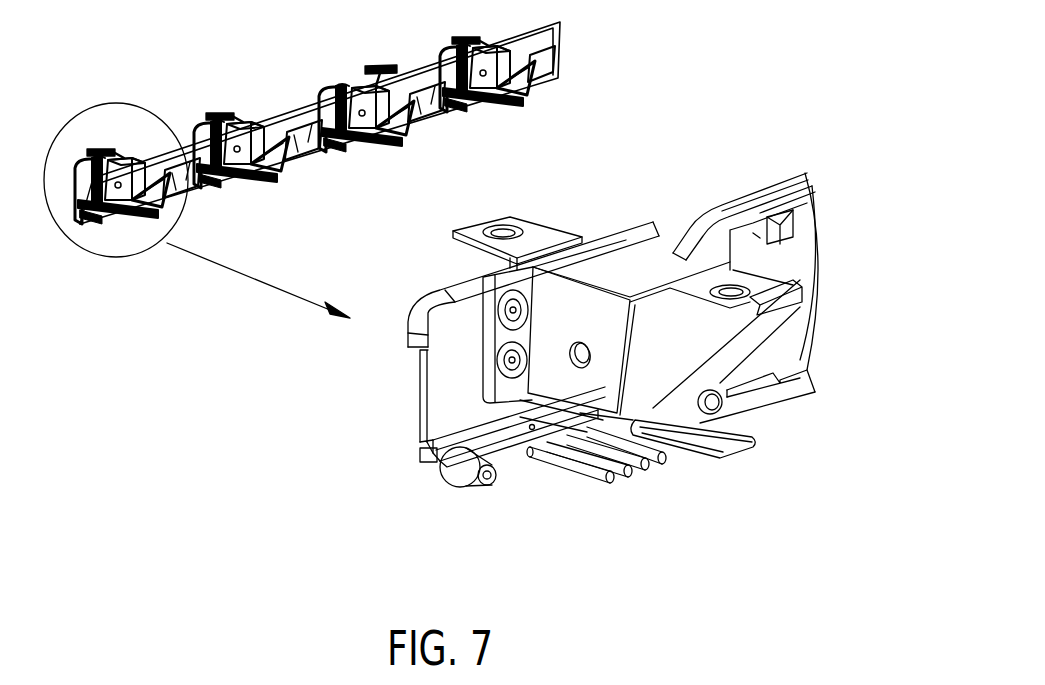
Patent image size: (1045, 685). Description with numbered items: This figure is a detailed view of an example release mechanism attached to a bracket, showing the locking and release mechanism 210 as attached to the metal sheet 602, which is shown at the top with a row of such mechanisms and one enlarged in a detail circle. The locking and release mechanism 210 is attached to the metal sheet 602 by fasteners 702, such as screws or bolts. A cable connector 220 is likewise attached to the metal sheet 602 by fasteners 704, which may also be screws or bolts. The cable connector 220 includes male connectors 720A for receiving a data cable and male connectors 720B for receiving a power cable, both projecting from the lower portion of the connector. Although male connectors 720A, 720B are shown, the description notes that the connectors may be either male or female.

The metal sheet 602 is at (567, 27).
The locking and release mechanism 210 is at (594, 334).
The fasteners 702 is at (507, 310).
The fasteners 704 is at (484, 475).
The cable connector 220 is at (525, 470).
The male connectors 720A is at (648, 465).
The male connectors 720B is at (733, 452).